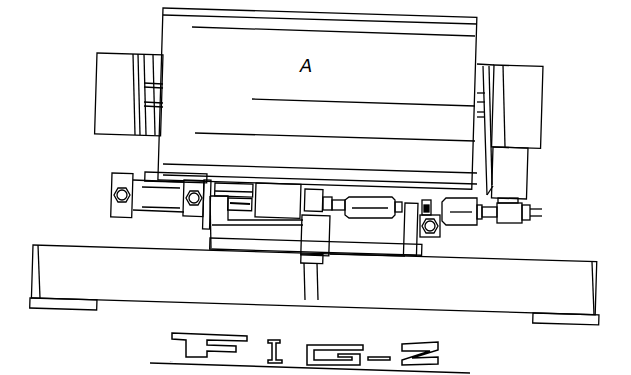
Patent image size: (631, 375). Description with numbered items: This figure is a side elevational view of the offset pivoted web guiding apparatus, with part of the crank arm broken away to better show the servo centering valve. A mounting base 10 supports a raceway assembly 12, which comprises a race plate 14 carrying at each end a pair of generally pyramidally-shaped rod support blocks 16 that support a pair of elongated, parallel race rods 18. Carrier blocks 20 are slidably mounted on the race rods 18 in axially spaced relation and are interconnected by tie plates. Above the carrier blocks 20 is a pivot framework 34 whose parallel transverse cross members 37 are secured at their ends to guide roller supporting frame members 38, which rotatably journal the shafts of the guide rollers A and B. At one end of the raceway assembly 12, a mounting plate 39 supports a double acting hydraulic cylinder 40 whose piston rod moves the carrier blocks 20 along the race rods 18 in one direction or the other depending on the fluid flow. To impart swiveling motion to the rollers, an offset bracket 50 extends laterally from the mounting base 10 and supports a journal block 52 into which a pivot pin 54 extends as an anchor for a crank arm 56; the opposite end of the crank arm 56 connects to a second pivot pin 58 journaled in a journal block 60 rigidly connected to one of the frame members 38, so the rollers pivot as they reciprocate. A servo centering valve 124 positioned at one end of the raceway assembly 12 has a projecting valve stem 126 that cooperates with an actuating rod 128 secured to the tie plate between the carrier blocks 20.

The mounting base 10 is at (223, 286).
The raceway assembly 12 is at (237, 191).
The race plate 14 is at (367, 248).
The rod support blocks 16 is at (220, 220).
The race rods 18 is at (242, 204).
The carrier blocks 20 is at (290, 207).
The pivot framework 34 is at (552, 100).
The transverse cross members 37 is at (484, 72).
The guide roller supporting frame members 38 is at (123, 88).
The mounting plate 39 is at (210, 182).
The double acting hydraulic cylinder 40 is at (158, 203).
The offset bracket 50 is at (318, 288).
The journal block 52 is at (326, 240).
The pivot pin 54 is at (322, 189).
The crank arm 56 is at (370, 196).
The second pivot pin 58 is at (512, 224).
The journal block 60 is at (523, 170).
The servo centering valve 124 is at (439, 236).
The valve stem 126 is at (446, 197).
The actuating rod 128 is at (431, 200).